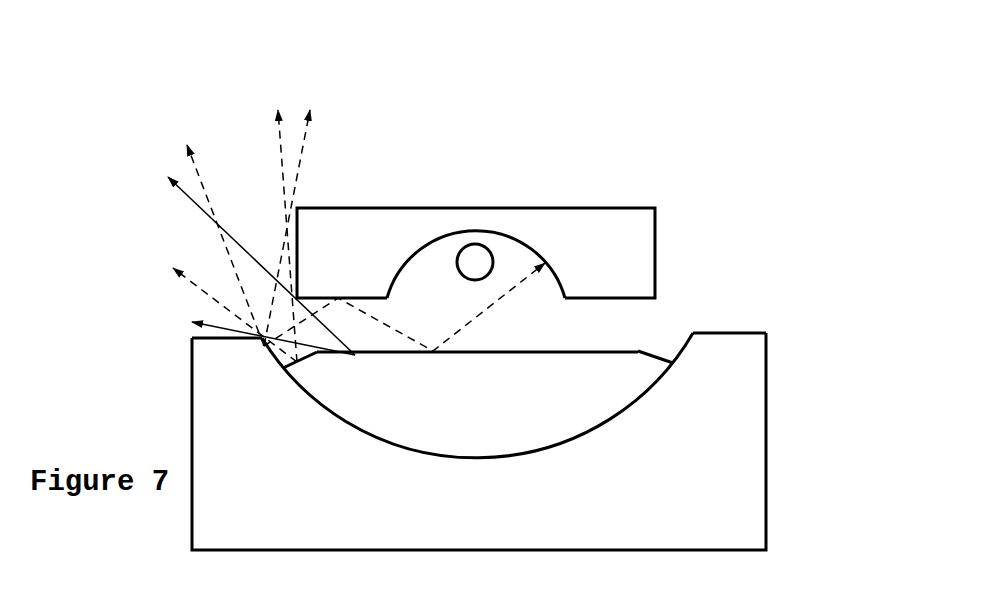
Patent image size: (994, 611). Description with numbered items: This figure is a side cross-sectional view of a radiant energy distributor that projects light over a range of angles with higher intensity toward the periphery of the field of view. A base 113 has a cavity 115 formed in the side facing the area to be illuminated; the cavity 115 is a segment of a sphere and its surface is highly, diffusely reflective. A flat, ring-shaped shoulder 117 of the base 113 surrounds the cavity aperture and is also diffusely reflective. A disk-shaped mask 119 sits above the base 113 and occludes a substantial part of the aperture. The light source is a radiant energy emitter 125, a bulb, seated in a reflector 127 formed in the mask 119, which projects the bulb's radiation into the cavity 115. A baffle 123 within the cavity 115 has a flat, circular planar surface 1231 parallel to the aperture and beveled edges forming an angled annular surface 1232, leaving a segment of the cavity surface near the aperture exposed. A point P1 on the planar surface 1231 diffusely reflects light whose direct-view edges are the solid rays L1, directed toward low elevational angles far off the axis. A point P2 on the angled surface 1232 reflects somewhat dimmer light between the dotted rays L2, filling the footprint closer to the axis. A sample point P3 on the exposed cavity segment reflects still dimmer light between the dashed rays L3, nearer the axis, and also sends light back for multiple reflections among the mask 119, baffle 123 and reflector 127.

The base 113 is at (768, 415).
The cavity 115 is at (687, 353).
The shoulder 117 is at (748, 330).
The mask 119 is at (620, 203).
The baffle 123 is at (557, 279).
The planar surface 1231 is at (563, 350).
The annular surface 1232 is at (657, 355).
The radiant energy emitter 125 is at (495, 259).
The reflector 127 is at (458, 227).
The rays L1 is at (246, 261).
The rays L2 is at (217, 219).
The rays L3 is at (357, 221).
The point P1 is at (355, 357).
The point P2 is at (300, 368).
The point P3 is at (258, 352).